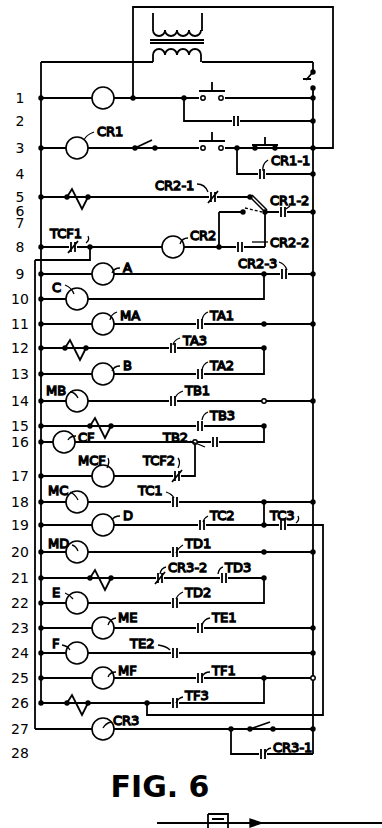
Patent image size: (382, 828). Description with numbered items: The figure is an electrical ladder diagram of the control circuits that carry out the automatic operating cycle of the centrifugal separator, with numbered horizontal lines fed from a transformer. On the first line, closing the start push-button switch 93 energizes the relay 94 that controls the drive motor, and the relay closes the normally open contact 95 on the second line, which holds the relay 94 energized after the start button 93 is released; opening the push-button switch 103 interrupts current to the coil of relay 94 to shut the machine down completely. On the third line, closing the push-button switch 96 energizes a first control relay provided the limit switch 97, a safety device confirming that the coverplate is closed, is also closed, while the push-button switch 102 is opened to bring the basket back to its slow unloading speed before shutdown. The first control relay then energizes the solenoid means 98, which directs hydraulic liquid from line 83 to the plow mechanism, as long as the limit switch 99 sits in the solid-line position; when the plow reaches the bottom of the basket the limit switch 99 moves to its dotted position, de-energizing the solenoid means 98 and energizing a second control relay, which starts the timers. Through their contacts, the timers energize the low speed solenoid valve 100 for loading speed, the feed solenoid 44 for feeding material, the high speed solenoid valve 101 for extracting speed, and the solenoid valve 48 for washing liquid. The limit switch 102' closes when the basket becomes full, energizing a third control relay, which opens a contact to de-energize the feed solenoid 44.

The relay 94 is at (102, 87).
The start push-button switch 93 is at (211, 88).
The push-button switch 103 is at (305, 78).
The normally open contact 95 is at (238, 117).
The limit switch 97 is at (150, 141).
The push-button switch 102 is at (209, 138).
The push-button switch 96 is at (272, 140).
The solenoid means 98 is at (93, 201).
The limit switch 99 is at (258, 197).
The low speed solenoid valve 100 is at (86, 342).
The high speed solenoid valve 101 is at (105, 421).
The feed solenoid 44 is at (104, 574).
The solenoid valve 48 is at (75, 703).
The limit switch 102' is at (276, 724).
The line 83 is at (290, 822).